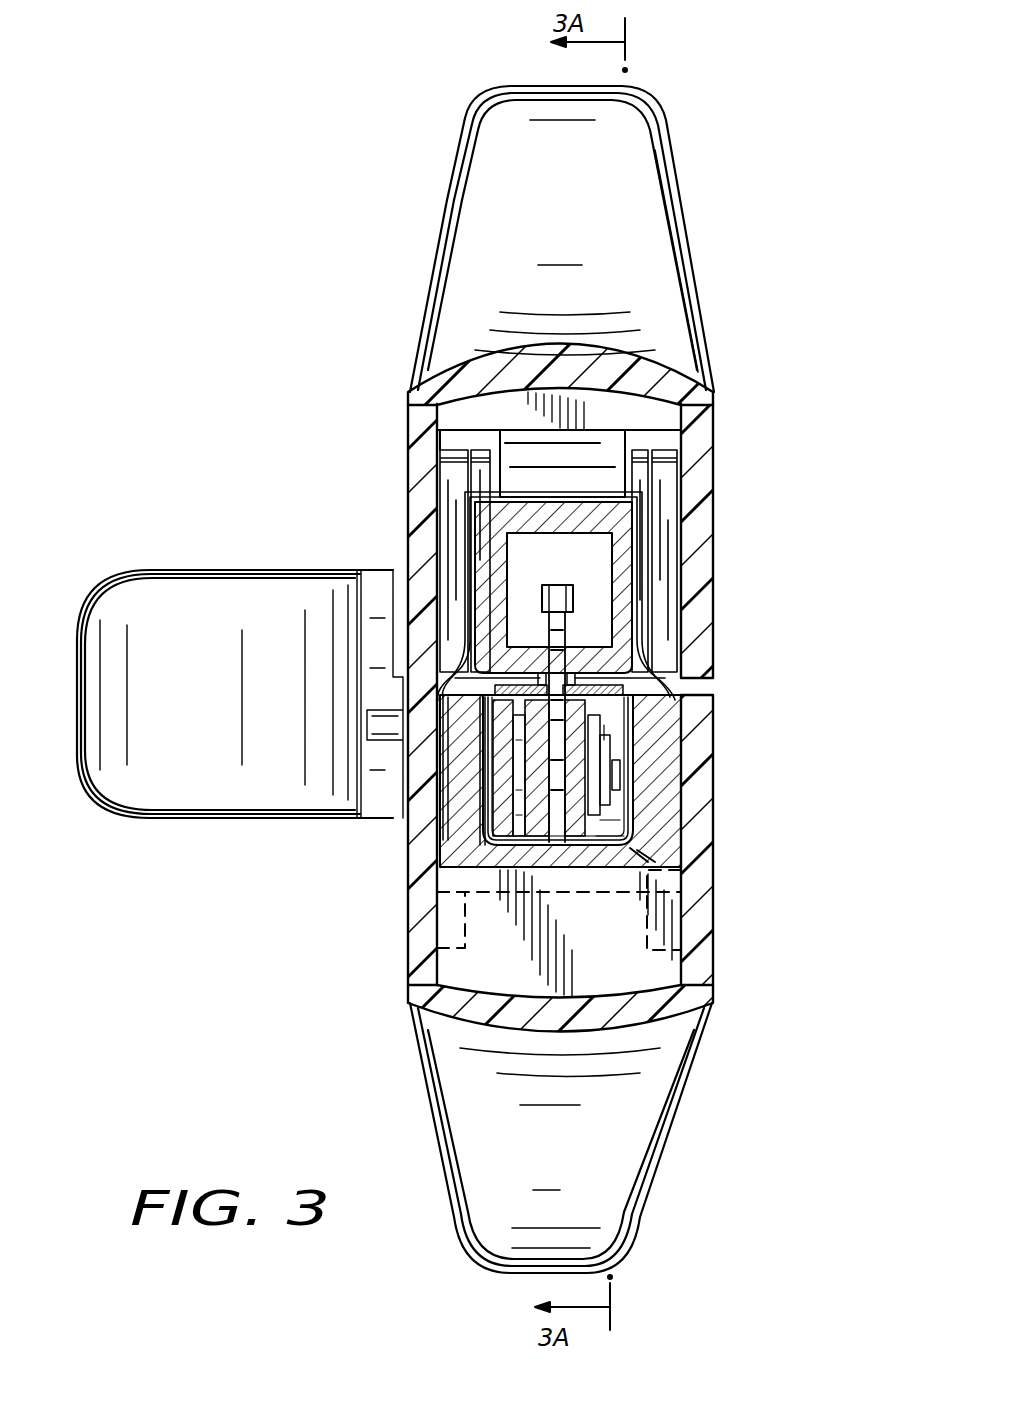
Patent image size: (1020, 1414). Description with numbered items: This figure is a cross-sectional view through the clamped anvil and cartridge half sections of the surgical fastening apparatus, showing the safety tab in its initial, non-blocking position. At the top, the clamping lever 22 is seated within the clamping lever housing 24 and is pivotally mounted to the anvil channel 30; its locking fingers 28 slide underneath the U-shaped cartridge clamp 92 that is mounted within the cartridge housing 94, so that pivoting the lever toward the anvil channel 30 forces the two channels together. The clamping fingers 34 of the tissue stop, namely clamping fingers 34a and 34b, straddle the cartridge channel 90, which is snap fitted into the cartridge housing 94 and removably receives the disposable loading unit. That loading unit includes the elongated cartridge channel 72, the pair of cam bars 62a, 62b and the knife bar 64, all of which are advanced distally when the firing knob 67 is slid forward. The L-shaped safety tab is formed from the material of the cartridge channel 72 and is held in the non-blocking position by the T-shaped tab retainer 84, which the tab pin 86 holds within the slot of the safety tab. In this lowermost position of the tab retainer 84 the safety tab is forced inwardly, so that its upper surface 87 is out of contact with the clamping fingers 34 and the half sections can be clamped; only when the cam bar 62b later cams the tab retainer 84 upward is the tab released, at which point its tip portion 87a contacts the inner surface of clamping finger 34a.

The clamping lever housing 24 is at (648, 212).
The cartridge housing 94 is at (650, 1143).
The firing knob 67 is at (198, 790).
The clamping lever 22 is at (658, 607).
The clamping fingers 34 is at (480, 513).
The anvil channel 30 is at (620, 548).
The locking fingers 28 is at (575, 596).
The knife bar 64 is at (565, 628).
The upper surface 87 is at (670, 685).
The tip portion 87a is at (655, 712).
The tab retainer 84 is at (662, 856).
The clamping finger 34a is at (660, 828).
The cartridge channel 72 is at (497, 800).
The tab pin 86 is at (640, 757).
The cartridge clamp 92 is at (677, 788).
The cartridge channel 90 is at (640, 858).
The clamping finger 34b is at (450, 803).
The cam bar 62a is at (500, 855).
The cam bar 62b is at (610, 840).